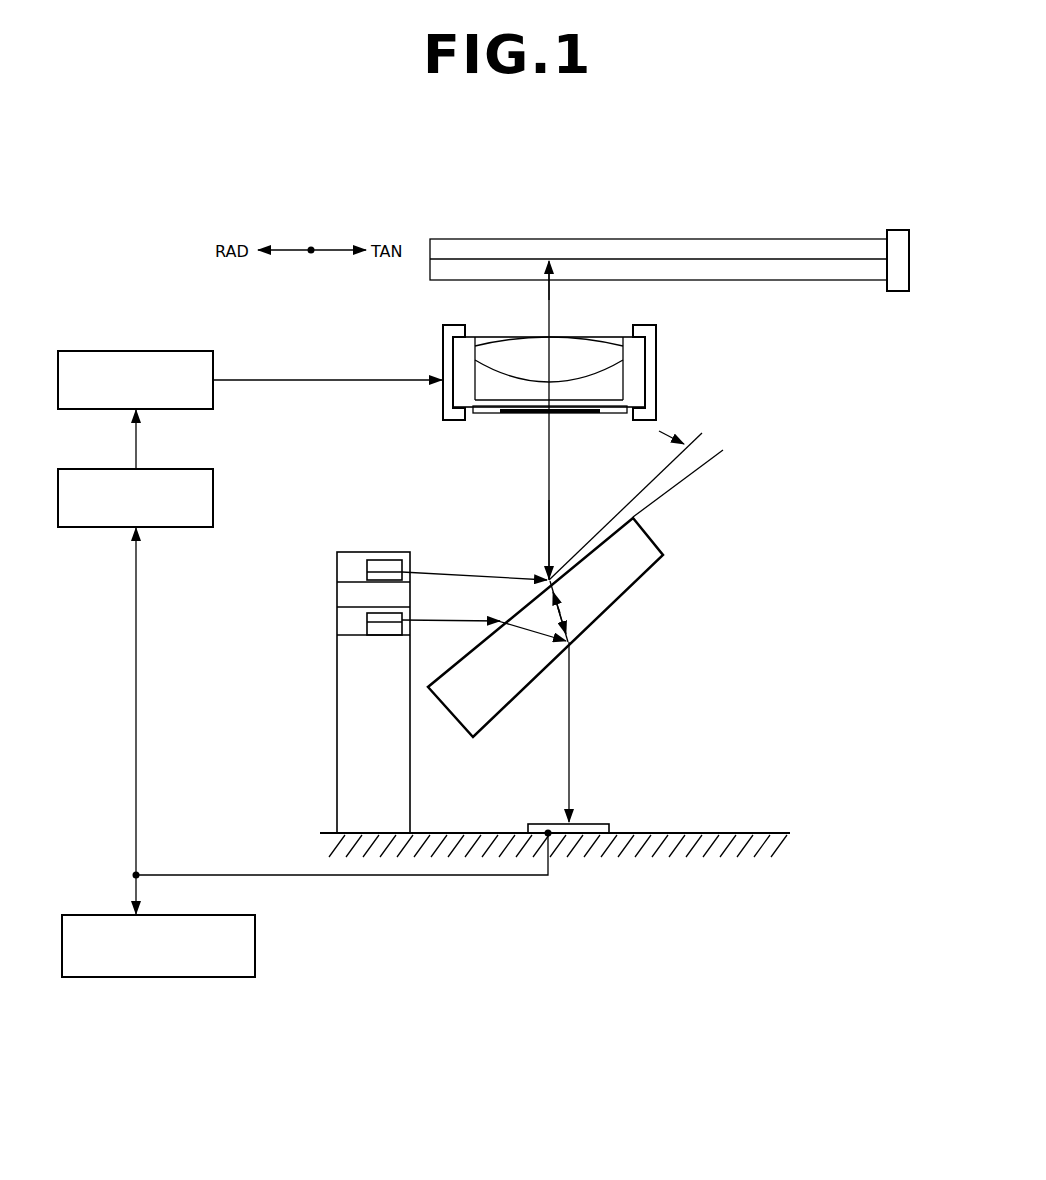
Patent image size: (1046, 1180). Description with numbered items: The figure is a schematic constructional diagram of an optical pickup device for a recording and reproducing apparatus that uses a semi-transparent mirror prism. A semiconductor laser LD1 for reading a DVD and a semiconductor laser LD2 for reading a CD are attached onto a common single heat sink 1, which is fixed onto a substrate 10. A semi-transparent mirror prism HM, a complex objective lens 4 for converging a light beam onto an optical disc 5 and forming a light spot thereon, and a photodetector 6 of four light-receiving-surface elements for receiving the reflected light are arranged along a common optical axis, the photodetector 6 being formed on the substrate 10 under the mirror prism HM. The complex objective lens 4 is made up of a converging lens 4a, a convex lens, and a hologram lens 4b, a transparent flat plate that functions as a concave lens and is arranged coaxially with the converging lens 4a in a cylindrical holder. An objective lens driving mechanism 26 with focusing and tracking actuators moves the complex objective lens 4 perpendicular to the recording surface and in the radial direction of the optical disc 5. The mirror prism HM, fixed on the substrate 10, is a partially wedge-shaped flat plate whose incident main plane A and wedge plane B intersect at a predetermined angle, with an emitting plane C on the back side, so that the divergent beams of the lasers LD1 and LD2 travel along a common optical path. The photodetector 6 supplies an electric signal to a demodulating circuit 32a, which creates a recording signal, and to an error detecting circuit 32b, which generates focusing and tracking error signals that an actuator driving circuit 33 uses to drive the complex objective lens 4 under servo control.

The heat sink 1 is at (341, 708).
The complex objective lens 4 is at (564, 392).
The converging lens 4a is at (645, 350).
The hologram lens 4b is at (486, 414).
The optical disc 5 is at (806, 246).
The photodetector 6 is at (598, 823).
The substrate 10 is at (722, 833).
The objective lens driving mechanism 26 is at (443, 332).
The demodulating circuit 32a is at (98, 978).
The error detecting circuit 32b is at (187, 528).
The actuator driving circuit 33 is at (195, 350).
The semiconductor laser LD1 is at (378, 560).
The semiconductor laser LD2 is at (378, 622).
The semi-transparent mirror prism HM is at (662, 550).
The incident main plane A is at (470, 646).
The wedge plane B is at (593, 522).
The emitting plane C is at (520, 703).